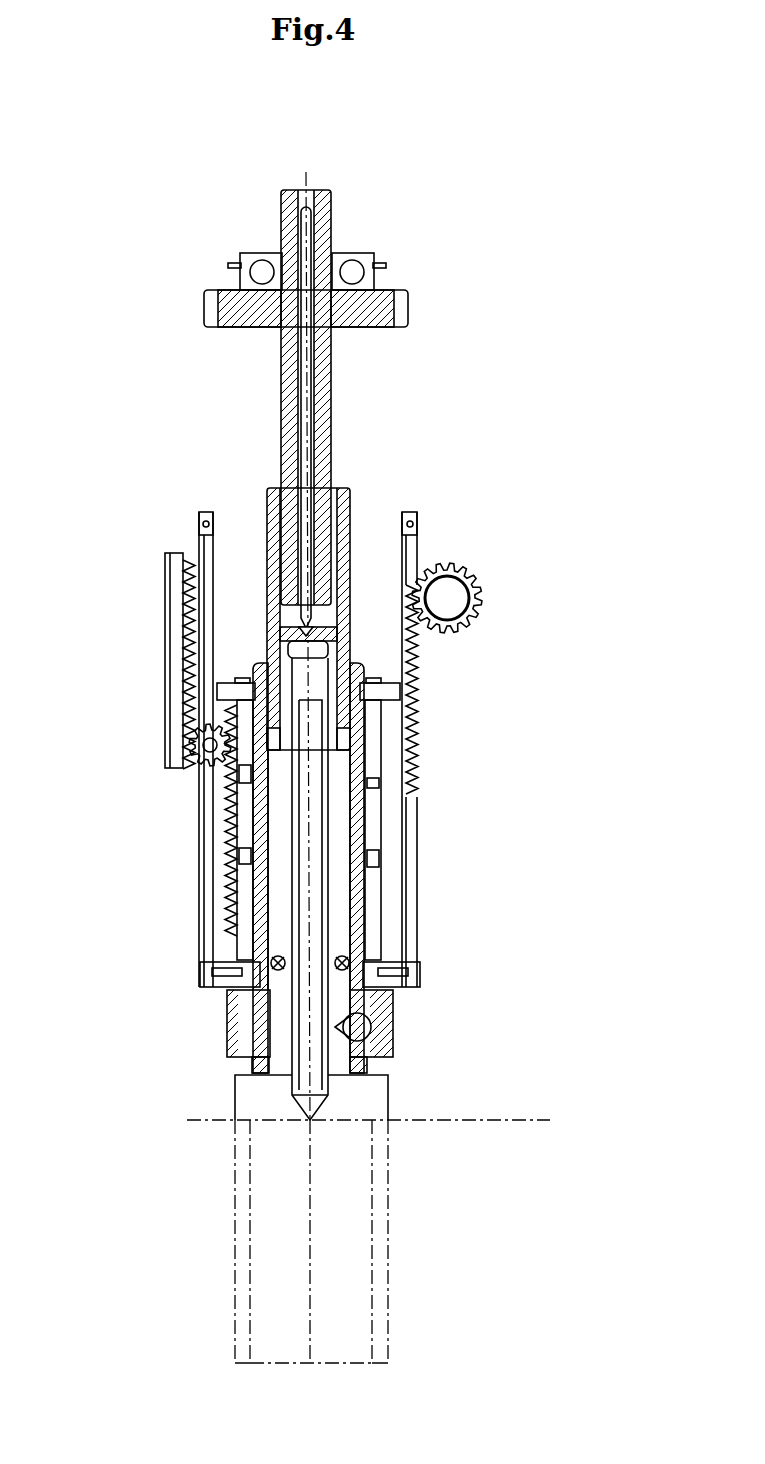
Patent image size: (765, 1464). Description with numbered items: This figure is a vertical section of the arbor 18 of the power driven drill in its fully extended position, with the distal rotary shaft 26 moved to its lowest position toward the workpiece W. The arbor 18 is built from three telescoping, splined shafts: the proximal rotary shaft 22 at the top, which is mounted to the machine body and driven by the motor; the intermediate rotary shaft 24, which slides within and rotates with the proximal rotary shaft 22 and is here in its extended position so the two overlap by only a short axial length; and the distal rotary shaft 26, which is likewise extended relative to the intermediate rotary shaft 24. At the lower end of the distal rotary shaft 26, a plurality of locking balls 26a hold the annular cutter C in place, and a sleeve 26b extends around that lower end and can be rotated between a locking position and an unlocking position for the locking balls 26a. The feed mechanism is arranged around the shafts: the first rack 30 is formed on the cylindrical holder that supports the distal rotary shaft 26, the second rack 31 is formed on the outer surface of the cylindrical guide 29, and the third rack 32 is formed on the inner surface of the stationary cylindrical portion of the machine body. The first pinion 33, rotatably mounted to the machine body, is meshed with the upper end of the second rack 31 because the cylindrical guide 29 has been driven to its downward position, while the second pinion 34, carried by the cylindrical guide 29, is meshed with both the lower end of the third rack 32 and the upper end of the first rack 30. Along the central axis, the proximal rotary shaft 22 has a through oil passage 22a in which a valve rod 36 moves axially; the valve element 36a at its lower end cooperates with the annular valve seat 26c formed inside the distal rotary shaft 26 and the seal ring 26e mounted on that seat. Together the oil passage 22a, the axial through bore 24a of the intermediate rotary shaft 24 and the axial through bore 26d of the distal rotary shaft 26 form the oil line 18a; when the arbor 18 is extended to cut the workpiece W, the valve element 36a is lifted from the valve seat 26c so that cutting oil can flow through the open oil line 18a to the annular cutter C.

The arbor 18 is at (146, 424).
The proximal rotary shaft 22 is at (330, 405).
The oil passage 22a is at (300, 385).
The valve rod 36 is at (297, 480).
The intermediate rotary shaft 24 is at (350, 500).
The valve element 36a is at (290, 632).
The distal rotary shaft 26 is at (353, 822).
The axial through bore 26d is at (343, 805).
The axial through bore 24a is at (368, 682).
The oil line 18a is at (272, 870).
The first rack 30 is at (222, 860).
The cylindrical guide 29 is at (418, 865).
The second rack 31 is at (400, 745).
The third rack 32 is at (183, 722).
The second pinion 34 is at (200, 762).
The first pinion 33 is at (480, 585).
The seal ring 26e is at (283, 977).
The annular valve seat 26c is at (247, 987).
The locking balls 26a is at (360, 1025).
The sleeve 26b is at (393, 1047).
The workpiece W is at (500, 1120).
The cutting tool C is at (385, 1188).